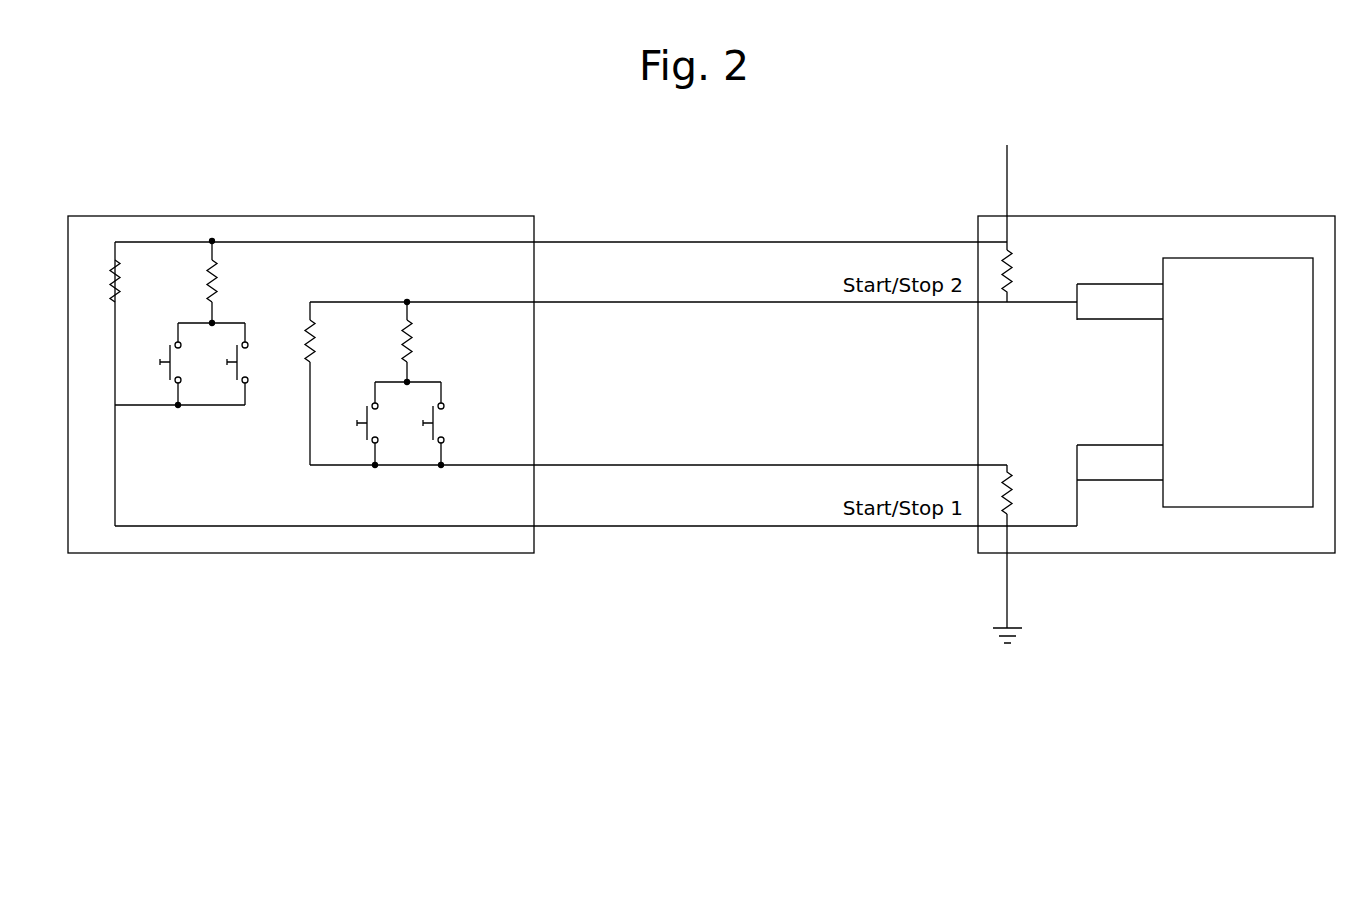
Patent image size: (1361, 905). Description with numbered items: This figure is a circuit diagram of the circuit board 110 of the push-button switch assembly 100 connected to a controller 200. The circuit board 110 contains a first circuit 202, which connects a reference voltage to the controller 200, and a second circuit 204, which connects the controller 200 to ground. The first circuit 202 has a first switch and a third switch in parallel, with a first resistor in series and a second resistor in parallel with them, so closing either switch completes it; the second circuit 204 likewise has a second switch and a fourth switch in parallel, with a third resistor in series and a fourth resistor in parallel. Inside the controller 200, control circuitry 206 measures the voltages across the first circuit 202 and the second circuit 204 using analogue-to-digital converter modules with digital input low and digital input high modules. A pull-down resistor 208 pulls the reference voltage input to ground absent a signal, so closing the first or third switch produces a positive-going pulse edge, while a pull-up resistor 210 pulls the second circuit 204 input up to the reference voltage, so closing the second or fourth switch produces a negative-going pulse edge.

The push-button switch assembly 100 is at (173, 210).
The circuit board 110 is at (307, 215).
The controller 200 is at (1145, 212).
The first circuit 202 is at (438, 238).
The second circuit 204 is at (454, 472).
The control circuitry 206 is at (1233, 258).
The pull-down resistor 208 is at (1013, 265).
The pull-up resistor 210 is at (1013, 495).